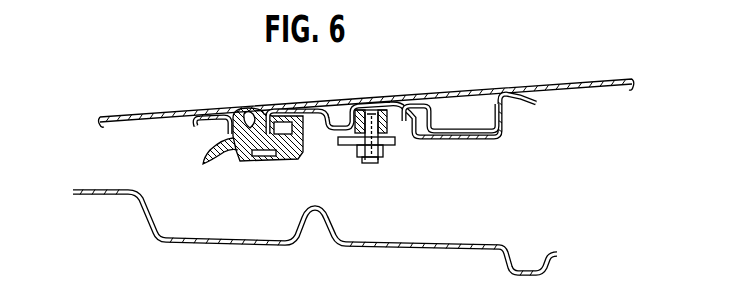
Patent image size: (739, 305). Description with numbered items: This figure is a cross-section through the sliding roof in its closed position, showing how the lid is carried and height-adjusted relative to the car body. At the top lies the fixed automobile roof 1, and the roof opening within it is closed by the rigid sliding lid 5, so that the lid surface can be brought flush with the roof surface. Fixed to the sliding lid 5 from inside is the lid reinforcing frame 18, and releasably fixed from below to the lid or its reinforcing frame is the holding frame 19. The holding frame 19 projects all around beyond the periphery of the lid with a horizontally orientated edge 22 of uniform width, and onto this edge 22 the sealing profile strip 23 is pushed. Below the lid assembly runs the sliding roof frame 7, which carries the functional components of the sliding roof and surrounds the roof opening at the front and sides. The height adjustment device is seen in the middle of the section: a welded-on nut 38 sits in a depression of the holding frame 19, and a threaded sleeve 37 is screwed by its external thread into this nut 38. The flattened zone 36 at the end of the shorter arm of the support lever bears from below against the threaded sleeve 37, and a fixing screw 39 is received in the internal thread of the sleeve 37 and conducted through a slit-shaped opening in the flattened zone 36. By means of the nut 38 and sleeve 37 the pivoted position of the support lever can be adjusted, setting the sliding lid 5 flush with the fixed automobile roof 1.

The fixed automobile roof 1 is at (127, 115).
The sliding lid 5 is at (572, 84).
The sliding roof frame 7 is at (433, 241).
The lid reinforcing frame 18 is at (505, 118).
The holding frame 19 is at (467, 139).
The edge 22 is at (260, 155).
The sealing profile strip 23 is at (247, 110).
The flattened zone 36 is at (338, 139).
The threaded sleeve 37 is at (378, 122).
The welded-on nut 38 is at (352, 112).
The fixing screw 39 is at (377, 158).